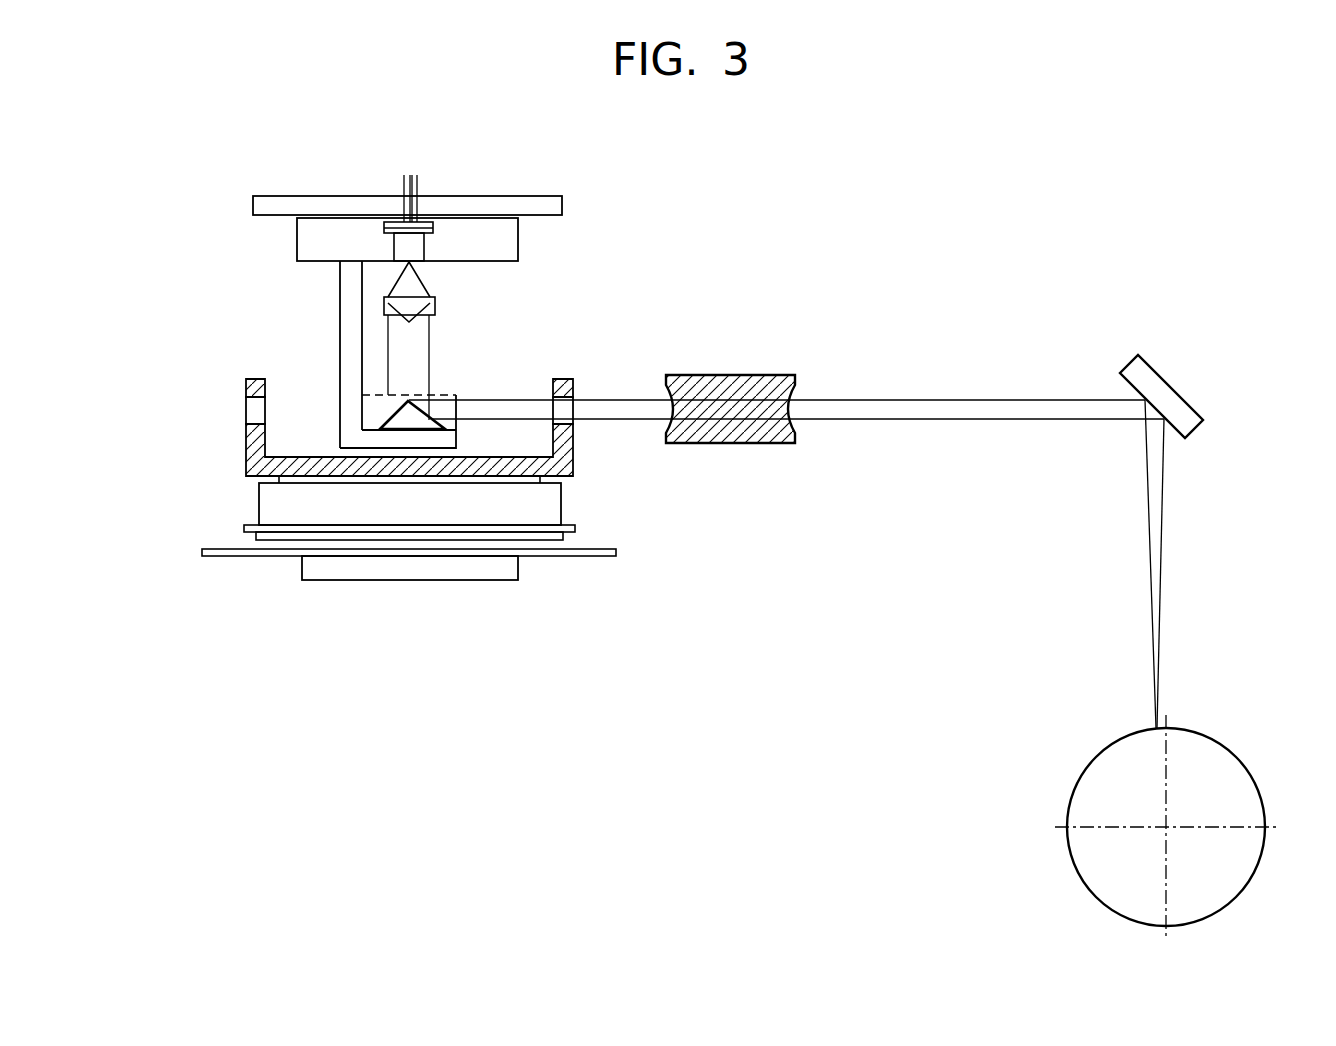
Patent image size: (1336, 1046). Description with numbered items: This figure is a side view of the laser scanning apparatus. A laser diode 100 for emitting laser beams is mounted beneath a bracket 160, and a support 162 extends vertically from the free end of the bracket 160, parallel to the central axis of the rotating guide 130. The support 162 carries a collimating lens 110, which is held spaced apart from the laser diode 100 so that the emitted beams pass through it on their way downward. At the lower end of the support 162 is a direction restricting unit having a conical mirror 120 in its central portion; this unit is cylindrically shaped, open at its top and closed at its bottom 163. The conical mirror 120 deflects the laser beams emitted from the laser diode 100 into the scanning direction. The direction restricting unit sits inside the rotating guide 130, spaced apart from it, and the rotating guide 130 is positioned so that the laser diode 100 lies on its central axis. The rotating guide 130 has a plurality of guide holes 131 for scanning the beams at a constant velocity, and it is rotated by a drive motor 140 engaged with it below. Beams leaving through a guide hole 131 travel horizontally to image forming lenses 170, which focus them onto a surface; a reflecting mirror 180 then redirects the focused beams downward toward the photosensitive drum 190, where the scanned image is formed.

The laser diode 100 is at (435, 229).
The collimating lens 110 is at (388, 305).
The conical mirror 120 is at (432, 415).
The rotating guide 130 is at (257, 465).
The guide hole 131 is at (567, 412).
The drive motor 140 is at (547, 505).
The bracket 160 is at (505, 203).
The support 162 is at (352, 350).
The bottom 163 is at (352, 415).
The image forming lens 170 is at (758, 375).
The reflecting mirror 180 is at (1168, 375).
The photosensitive drum 190 is at (1202, 733).